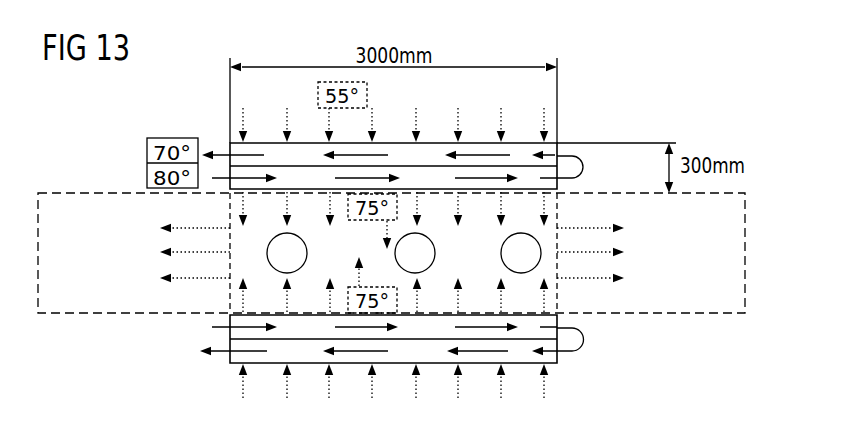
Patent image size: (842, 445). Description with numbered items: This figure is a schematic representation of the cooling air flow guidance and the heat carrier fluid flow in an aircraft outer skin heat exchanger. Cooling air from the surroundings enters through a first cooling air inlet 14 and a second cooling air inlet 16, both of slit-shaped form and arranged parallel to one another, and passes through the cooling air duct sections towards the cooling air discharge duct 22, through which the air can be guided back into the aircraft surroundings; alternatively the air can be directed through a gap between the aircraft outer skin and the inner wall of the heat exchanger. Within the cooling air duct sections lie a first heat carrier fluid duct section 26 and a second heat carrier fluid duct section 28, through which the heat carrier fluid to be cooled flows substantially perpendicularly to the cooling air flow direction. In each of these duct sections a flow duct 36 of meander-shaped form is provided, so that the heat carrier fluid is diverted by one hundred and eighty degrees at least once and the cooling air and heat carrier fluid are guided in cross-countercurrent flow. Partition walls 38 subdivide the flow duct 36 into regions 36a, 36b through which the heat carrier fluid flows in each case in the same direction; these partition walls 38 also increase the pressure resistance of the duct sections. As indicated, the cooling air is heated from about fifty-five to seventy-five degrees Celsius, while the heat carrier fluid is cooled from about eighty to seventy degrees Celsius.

The first cooling air inlet 14 is at (522, 141).
The second cooling air inlet 16 is at (520, 364).
The cooling air discharge duct 22 is at (535, 261).
The first heat carrier fluid duct section 26 is at (590, 167).
The second heat carrier fluid duct section 28 is at (590, 340).
The flow duct 36 is at (398, 152).
The region of the flow duct 36a is at (230, 187).
The region of the flow duct 36b is at (230, 148).
The partition walls 38 is at (436, 168).